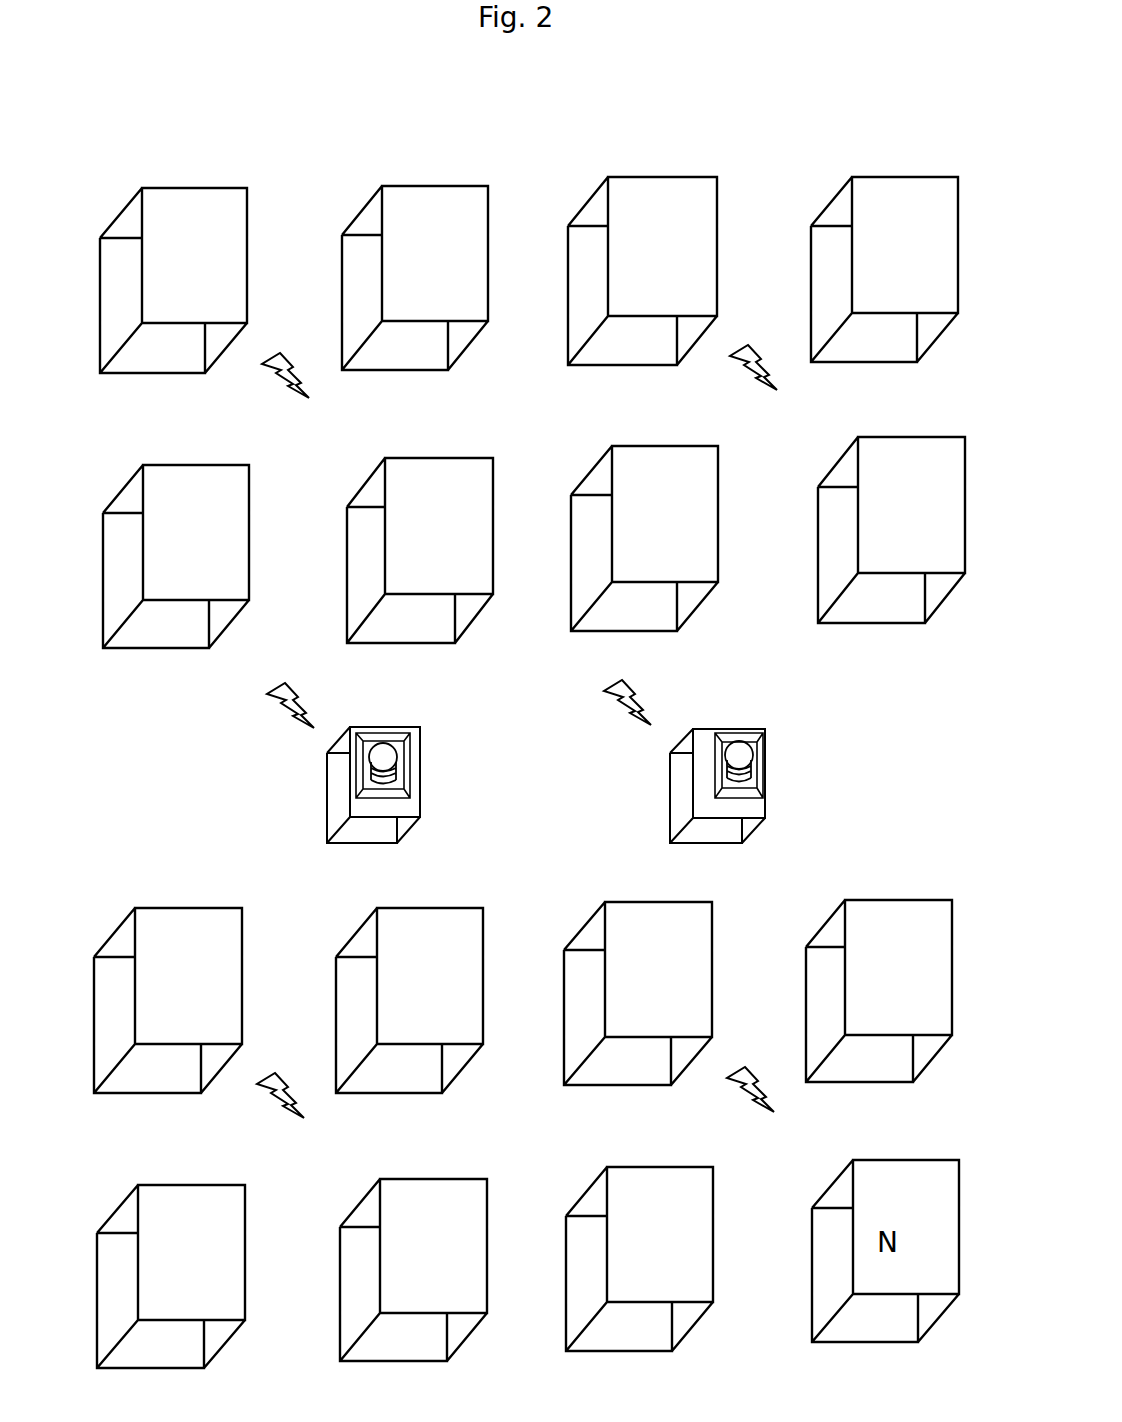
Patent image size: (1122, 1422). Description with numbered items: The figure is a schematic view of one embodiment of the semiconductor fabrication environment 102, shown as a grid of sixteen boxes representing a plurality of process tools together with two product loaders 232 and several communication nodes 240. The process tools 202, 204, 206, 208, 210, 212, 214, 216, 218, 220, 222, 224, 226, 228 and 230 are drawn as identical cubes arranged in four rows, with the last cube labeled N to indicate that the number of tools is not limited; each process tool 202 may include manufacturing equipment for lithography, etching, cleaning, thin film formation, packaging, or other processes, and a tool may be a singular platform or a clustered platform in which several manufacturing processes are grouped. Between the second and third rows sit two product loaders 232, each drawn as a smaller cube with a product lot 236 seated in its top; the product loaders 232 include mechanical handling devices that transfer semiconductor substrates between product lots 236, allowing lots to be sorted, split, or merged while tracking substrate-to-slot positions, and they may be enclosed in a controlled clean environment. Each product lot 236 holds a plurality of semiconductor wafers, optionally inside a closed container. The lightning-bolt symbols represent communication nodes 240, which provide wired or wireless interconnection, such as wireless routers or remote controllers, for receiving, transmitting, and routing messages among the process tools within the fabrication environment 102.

The semiconductor fabrication environment 102 is at (774, 88).
The process tool 202 is at (173, 280).
The process tool 204 is at (415, 278).
The process tool 206 is at (642, 271).
The process tool 208 is at (884, 269).
The process tool 210 is at (176, 556).
The process tool 212 is at (420, 550).
The process tool 214 is at (644, 538).
The process tool 216 is at (891, 530).
The process tool 218 is at (168, 1000).
The process tool 220 is at (409, 1000).
The process tool 222 is at (638, 993).
The process tool 224 is at (879, 991).
The process tool 226 is at (171, 1276).
The process tool 228 is at (413, 1270).
The process tool 230 is at (639, 1259).
The product loader 232 is at (422, 807).
The product lot 236 is at (357, 780).
The communication node 240 is at (287, 387).